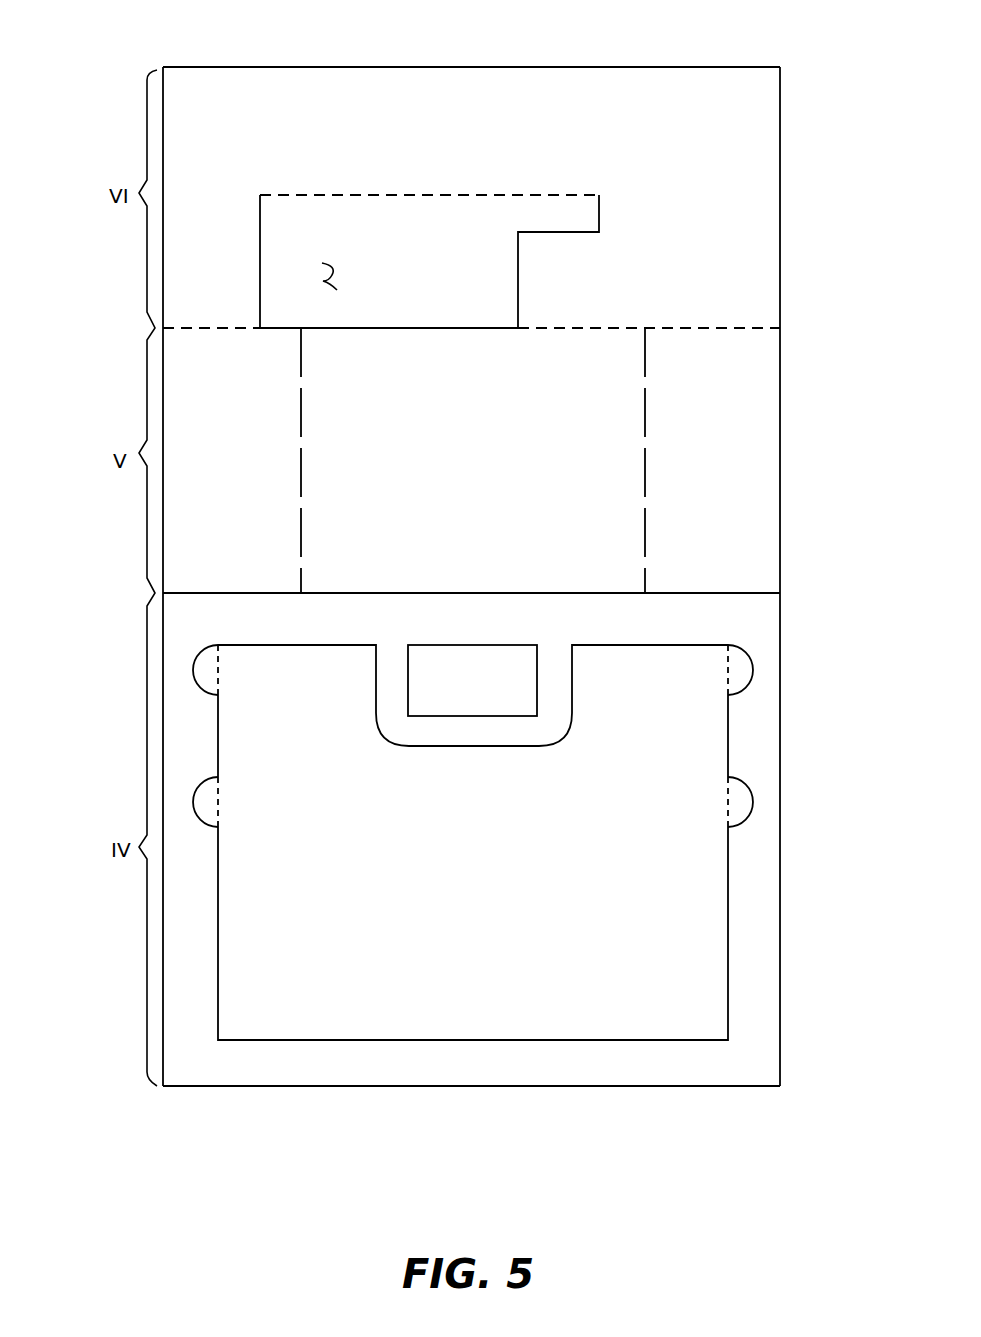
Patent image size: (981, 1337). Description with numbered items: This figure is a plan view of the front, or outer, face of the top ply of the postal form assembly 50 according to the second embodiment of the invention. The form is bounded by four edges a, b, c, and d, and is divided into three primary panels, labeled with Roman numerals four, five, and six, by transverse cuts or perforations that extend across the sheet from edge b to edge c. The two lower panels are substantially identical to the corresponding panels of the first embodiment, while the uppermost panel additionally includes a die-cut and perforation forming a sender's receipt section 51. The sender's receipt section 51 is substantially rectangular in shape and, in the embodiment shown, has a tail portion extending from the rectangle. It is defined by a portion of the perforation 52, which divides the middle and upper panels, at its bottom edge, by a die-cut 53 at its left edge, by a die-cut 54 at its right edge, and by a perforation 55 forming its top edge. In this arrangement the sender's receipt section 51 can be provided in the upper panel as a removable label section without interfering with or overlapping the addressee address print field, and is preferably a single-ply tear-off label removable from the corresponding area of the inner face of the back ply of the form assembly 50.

The form assembly 50 is at (122, 113).
The sender's receipt section 51 is at (323, 281).
The perforation 52 is at (708, 327).
The die-cut 53 is at (260, 246).
The die-cut 54 is at (599, 215).
The perforation 55 is at (331, 195).
The edge a is at (463, 1086).
The edge b is at (781, 910).
The edge c is at (163, 942).
The edge d is at (570, 67).